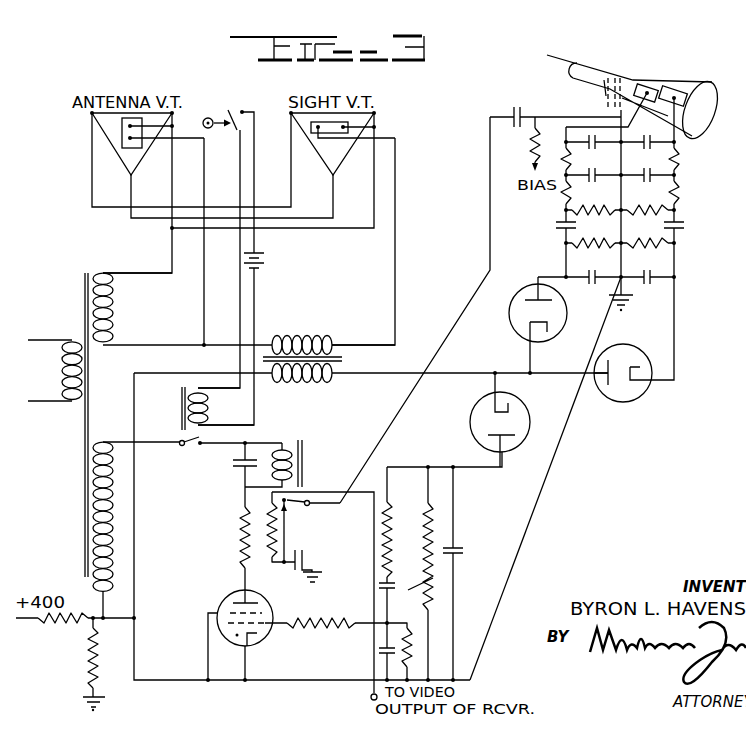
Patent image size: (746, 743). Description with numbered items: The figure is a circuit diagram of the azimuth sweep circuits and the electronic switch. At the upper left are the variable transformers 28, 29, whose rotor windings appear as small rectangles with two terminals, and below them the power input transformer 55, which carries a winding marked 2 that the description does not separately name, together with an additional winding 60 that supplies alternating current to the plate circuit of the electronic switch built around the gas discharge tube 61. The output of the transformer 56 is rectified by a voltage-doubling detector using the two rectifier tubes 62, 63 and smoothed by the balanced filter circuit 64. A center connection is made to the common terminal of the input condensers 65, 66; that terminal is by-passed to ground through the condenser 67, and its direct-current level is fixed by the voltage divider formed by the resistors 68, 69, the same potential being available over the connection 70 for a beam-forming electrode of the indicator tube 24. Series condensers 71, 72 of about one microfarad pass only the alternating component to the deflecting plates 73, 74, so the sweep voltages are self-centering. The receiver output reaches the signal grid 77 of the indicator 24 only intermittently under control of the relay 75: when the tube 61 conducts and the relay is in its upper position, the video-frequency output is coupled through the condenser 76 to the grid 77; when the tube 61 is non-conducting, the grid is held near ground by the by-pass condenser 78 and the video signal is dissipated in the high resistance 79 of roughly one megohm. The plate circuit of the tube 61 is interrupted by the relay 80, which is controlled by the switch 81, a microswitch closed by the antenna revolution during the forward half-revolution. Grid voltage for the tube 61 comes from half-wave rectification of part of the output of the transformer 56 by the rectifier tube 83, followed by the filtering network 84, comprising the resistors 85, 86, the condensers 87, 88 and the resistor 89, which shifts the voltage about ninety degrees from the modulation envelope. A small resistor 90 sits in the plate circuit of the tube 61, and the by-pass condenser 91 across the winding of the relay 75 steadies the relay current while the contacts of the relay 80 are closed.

The primary winding 2 is at (52, 370).
The indicator tube 24 is at (640, 103).
The variable transformer 28 is at (296, 120).
The variable transformer 29 is at (100, 119).
The power input transformer 55 is at (86, 281).
The transformer 56 is at (342, 358).
The additional winding 60 is at (100, 441).
The gas discharge tube 61 is at (222, 591).
The rectifier tube 62 is at (567, 308).
The rectifier tube 63 is at (646, 396).
The filter circuit 64 is at (676, 190).
The input condenser 65 is at (590, 281).
The input condenser 66 is at (648, 281).
The condenser 67 is at (627, 300).
The resistor 68 is at (52, 621).
The resistor 69 is at (97, 640).
The connection 70 is at (612, 108).
The series condenser 71 is at (556, 226).
The series condenser 72 is at (686, 225).
The deflecting plate 73 is at (631, 80).
The deflecting plate 74 is at (683, 88).
The relay 75 is at (303, 470).
The condenser 76 is at (521, 107).
The signal grid 77 is at (608, 88).
The condenser 78 is at (302, 556).
The high resistance 79 is at (276, 527).
The relay 80 is at (183, 431).
The switch 81 is at (209, 118).
The rectifier tube 83 is at (530, 415).
The network 84 is at (432, 585).
The resistor 85 is at (388, 531).
The resistor 86 is at (412, 641).
The condenser 87 is at (388, 584).
The condenser 88 is at (380, 650).
The resistor 89 is at (312, 630).
The small resistor 90 is at (243, 527).
The by-pass condenser 91 is at (233, 462).